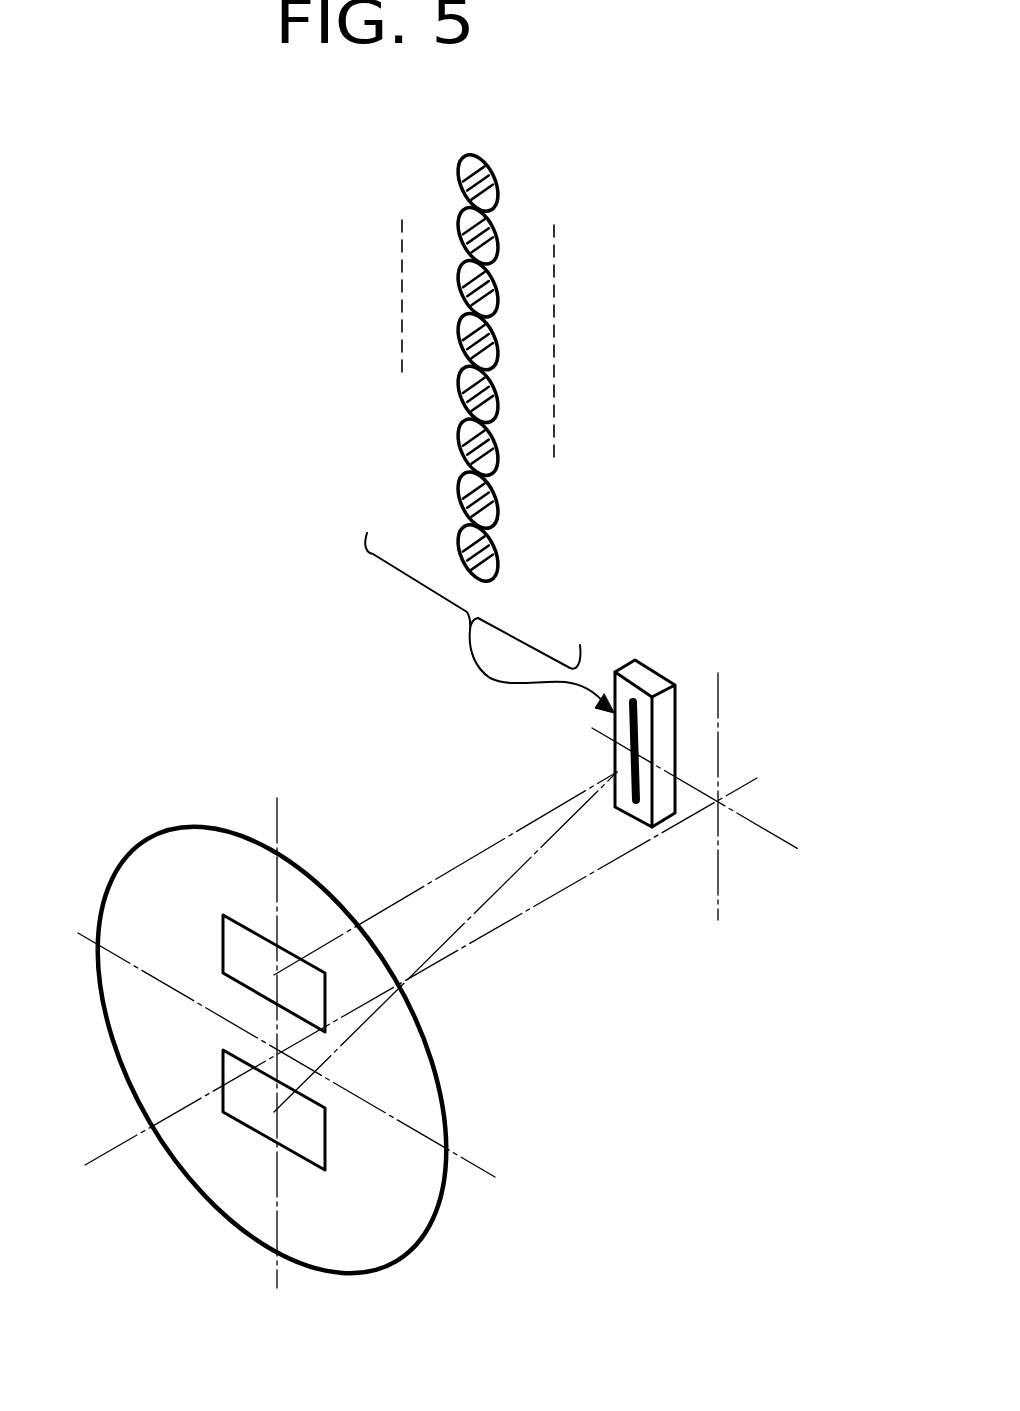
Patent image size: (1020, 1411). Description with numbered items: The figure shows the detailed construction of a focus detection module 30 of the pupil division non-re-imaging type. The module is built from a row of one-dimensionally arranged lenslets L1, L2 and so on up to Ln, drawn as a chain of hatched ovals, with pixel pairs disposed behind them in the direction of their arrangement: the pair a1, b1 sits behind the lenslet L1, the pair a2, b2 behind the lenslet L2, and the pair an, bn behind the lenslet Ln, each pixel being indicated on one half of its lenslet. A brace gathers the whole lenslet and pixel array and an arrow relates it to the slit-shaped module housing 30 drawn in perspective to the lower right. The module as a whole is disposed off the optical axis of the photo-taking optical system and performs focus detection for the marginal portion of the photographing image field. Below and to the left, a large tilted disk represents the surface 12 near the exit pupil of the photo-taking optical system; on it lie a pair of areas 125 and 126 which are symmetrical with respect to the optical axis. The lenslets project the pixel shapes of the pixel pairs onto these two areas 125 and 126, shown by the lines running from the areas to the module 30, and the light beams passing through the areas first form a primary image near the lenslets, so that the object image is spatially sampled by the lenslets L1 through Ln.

The surface 12 is at (425, 1200).
The area 125 is at (237, 1113).
The area 126 is at (242, 935).
The focus detection module 30 is at (655, 672).
The lenslet L1 is at (503, 557).
The lenslet L2 is at (502, 507).
The lenslet Ln is at (498, 188).
The pixel a1 is at (463, 560).
The pixel b1 is at (463, 527).
The pixel a2 is at (470, 500).
The pixel b2 is at (470, 477).
The pixel an is at (470, 190).
The pixel bn is at (473, 160).